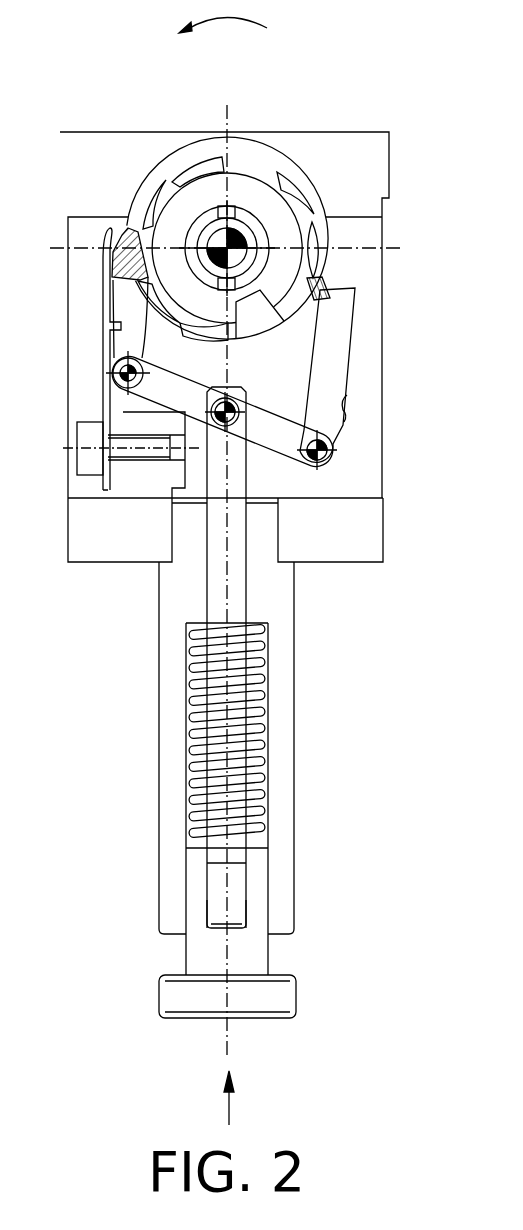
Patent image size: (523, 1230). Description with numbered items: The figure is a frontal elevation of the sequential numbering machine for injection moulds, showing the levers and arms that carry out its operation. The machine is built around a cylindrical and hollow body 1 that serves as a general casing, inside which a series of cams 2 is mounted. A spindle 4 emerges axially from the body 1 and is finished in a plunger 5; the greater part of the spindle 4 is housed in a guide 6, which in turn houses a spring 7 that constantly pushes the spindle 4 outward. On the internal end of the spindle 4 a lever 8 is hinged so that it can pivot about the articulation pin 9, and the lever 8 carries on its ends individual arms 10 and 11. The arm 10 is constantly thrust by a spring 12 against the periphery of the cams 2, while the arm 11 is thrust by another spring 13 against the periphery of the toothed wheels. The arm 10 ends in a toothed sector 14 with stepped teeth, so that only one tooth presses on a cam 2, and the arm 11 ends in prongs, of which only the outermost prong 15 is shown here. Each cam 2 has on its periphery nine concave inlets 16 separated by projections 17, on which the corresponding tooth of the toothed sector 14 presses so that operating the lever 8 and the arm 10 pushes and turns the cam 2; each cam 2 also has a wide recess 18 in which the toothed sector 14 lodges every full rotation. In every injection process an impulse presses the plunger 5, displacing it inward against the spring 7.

The cylindrical and hollow body 1 is at (365, 470).
The cam 2 is at (250, 200).
The spindle 4 is at (217, 597).
The plunger 5 is at (175, 993).
The guide 6 is at (175, 735).
The spring 7 is at (190, 820).
The lever 8 is at (275, 437).
The articulation pin 9 is at (220, 420).
The arm 10 is at (337, 360).
The arm 11 is at (118, 306).
The spring 12 is at (340, 427).
The spring 13 is at (102, 352).
The toothed sector 14 is at (308, 282).
The prong 15 is at (127, 225).
The concave inlet 16 is at (316, 233).
The projection 17 is at (275, 173).
The recess 18 is at (257, 302).